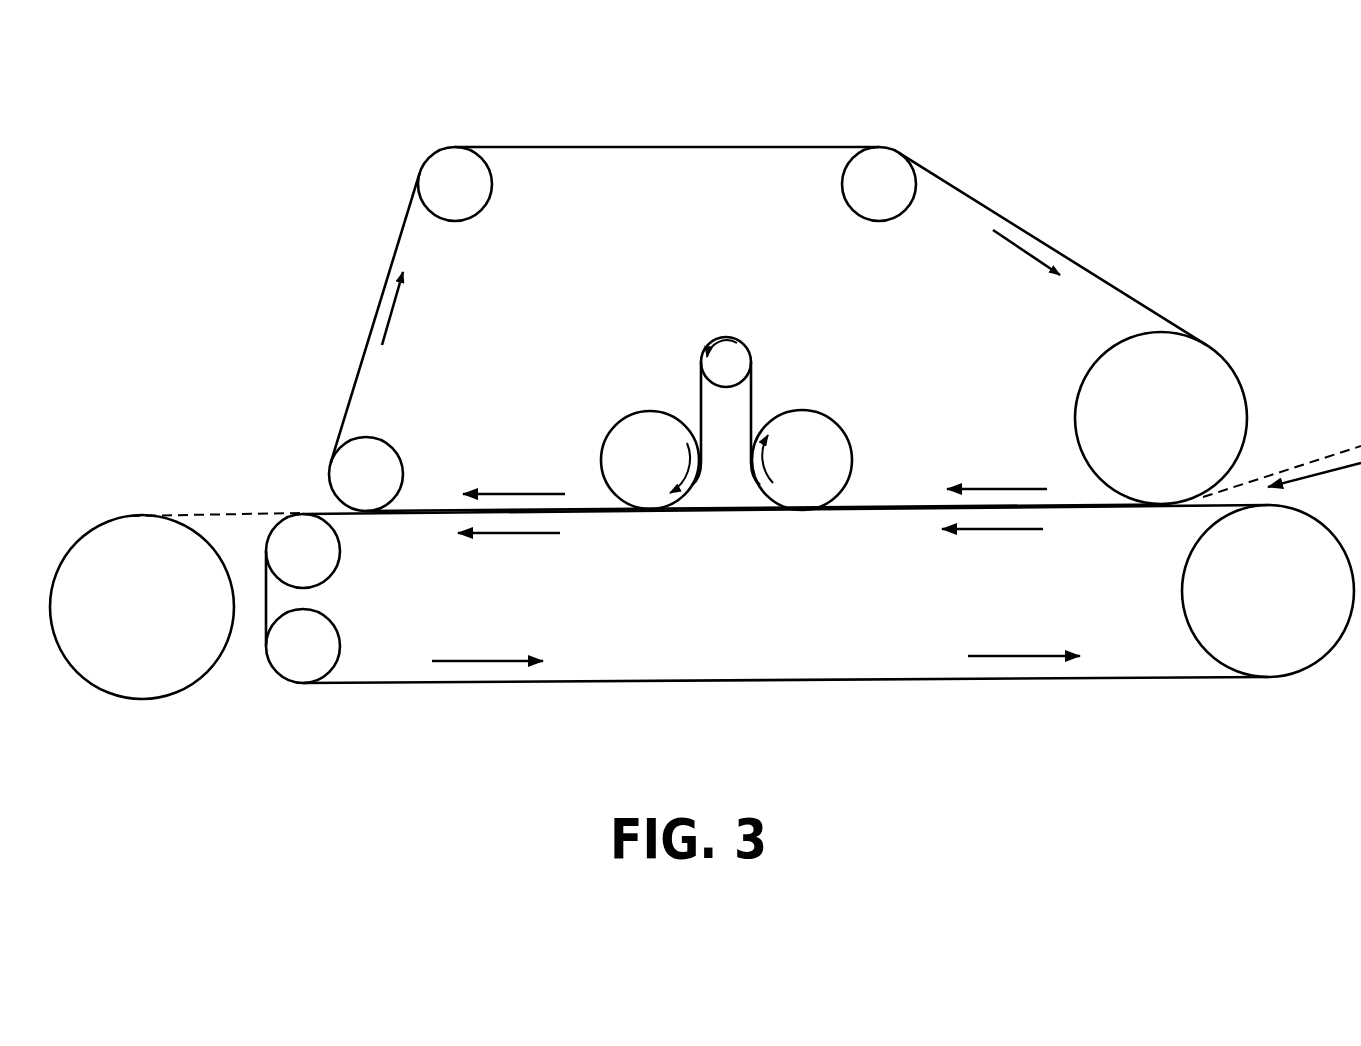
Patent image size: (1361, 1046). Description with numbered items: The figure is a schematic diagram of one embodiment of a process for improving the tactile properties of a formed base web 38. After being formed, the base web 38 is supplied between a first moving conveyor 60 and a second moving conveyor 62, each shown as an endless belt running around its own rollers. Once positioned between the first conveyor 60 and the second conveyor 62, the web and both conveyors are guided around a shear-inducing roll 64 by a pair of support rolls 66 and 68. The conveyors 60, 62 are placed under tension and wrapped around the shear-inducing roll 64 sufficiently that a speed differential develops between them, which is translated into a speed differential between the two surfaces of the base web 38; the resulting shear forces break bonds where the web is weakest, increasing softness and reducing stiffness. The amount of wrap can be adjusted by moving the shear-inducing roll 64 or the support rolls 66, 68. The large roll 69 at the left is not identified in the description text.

The base web 38 is at (253, 512).
The first moving conveyor 60 is at (792, 147).
The second moving conveyor 62 is at (1037, 679).
The shear-inducing roll 64 is at (749, 367).
The support roll 66 is at (832, 443).
The support roll 68 is at (617, 445).
The take-up roll 69 is at (160, 699).